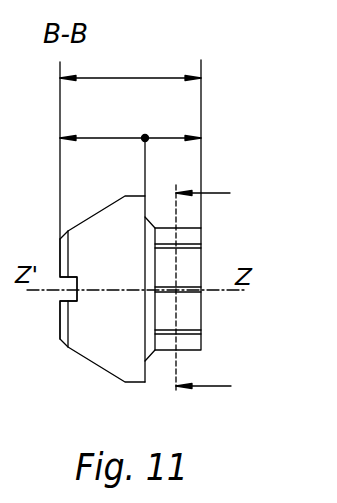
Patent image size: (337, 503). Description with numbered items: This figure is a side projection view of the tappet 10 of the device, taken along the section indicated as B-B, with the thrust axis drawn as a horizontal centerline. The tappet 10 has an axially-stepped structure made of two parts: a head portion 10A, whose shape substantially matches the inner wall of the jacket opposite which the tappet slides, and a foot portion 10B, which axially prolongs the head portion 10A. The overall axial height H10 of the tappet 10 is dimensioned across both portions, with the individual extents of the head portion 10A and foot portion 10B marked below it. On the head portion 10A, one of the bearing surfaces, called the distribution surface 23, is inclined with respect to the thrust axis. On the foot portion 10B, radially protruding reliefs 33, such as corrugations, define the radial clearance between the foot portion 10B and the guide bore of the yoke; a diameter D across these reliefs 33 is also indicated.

The tappet 10 is at (188, 400).
The head portion 10A is at (118, 133).
The foot portion 10B is at (146, 134).
The distribution surface 23 is at (147, 360).
The radially protruding reliefs 33 is at (191, 251).
The axial height H10 is at (128, 78).
The diameter D is at (203, 279).